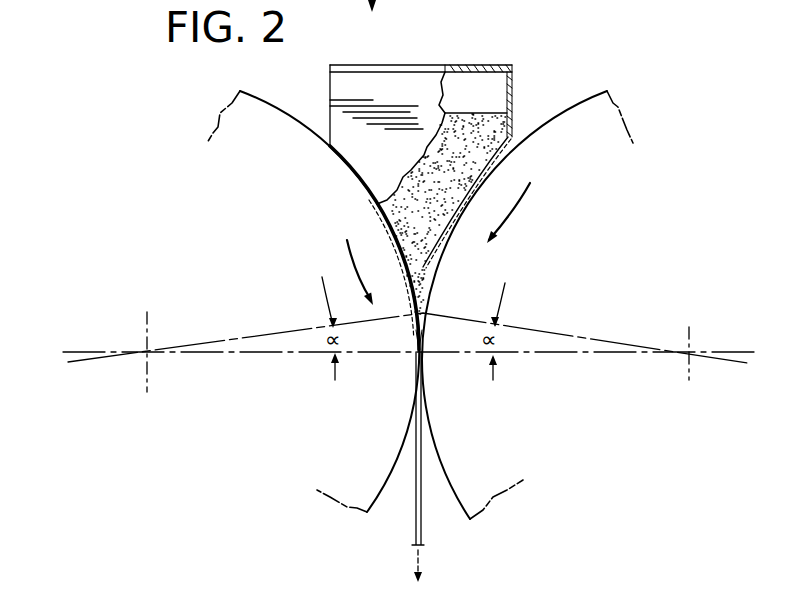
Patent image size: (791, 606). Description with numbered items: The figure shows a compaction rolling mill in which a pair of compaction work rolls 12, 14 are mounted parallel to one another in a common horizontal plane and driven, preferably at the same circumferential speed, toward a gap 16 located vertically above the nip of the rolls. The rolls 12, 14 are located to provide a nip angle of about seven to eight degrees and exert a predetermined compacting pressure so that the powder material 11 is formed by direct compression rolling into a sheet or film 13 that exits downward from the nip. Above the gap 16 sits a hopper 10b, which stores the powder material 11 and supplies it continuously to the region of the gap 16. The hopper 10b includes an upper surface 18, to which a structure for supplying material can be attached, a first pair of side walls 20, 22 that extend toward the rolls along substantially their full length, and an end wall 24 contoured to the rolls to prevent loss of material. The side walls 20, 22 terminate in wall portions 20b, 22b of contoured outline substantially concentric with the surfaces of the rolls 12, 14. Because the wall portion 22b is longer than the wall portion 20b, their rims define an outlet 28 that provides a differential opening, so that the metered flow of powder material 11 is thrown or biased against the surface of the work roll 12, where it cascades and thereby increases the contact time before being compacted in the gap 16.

The hopper 10b is at (417, 60).
The powder material 11 is at (431, 201).
The compaction work roll 12 is at (556, 112).
The sheet or film 13 is at (421, 482).
The compaction work roll 14 is at (296, 118).
The gap 16 is at (424, 314).
The upper surface 18 is at (487, 66).
The side wall 20 is at (513, 97).
The wall portion 20b is at (467, 172).
The side wall 22 is at (330, 97).
The wall portion 22b is at (394, 222).
The end wall 24 is at (394, 161).
The outlet 28 is at (420, 276).